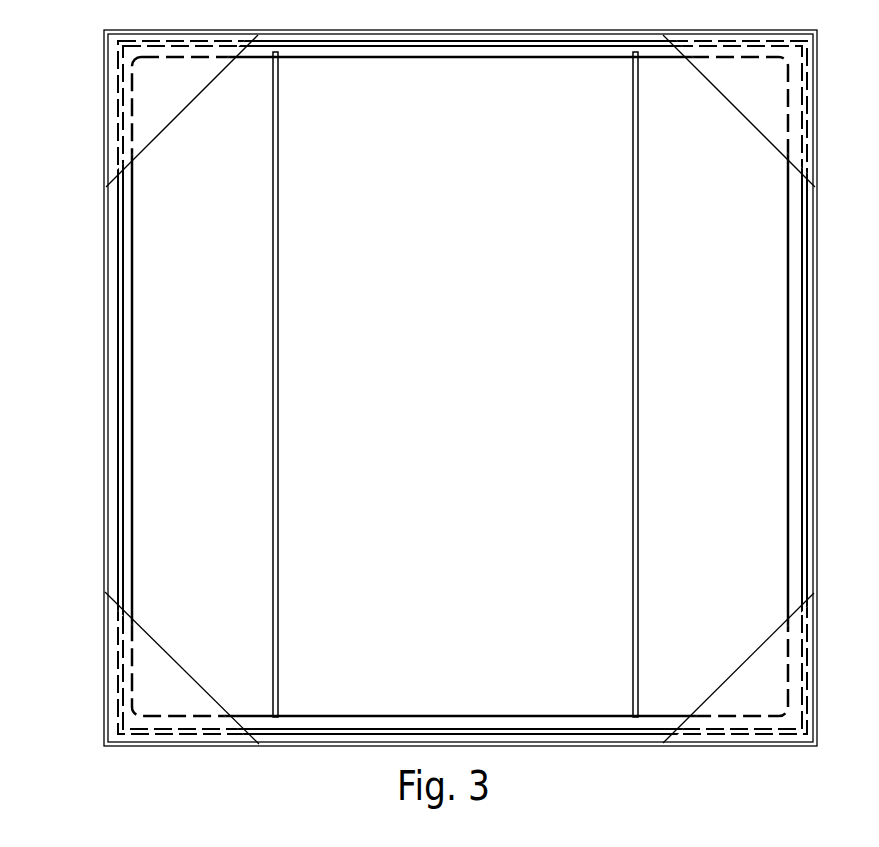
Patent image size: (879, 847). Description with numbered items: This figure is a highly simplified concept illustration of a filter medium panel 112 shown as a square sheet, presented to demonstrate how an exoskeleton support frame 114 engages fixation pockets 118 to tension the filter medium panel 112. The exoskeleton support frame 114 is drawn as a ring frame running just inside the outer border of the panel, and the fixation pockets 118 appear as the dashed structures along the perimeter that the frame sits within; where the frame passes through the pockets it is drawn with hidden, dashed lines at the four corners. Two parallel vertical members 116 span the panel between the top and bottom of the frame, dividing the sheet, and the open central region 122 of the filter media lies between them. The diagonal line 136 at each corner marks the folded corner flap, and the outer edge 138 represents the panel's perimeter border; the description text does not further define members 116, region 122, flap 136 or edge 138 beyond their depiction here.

The filter medium panel 112 is at (225, 337).
The exoskeleton support frame 114 is at (437, 715).
The support rails 116 is at (638, 420).
The fixation pockets 118 is at (152, 672).
The central panel region 122 is at (479, 402).
The corner flap fold line 136 is at (166, 624).
The outer edge / frame border 138 is at (110, 718).